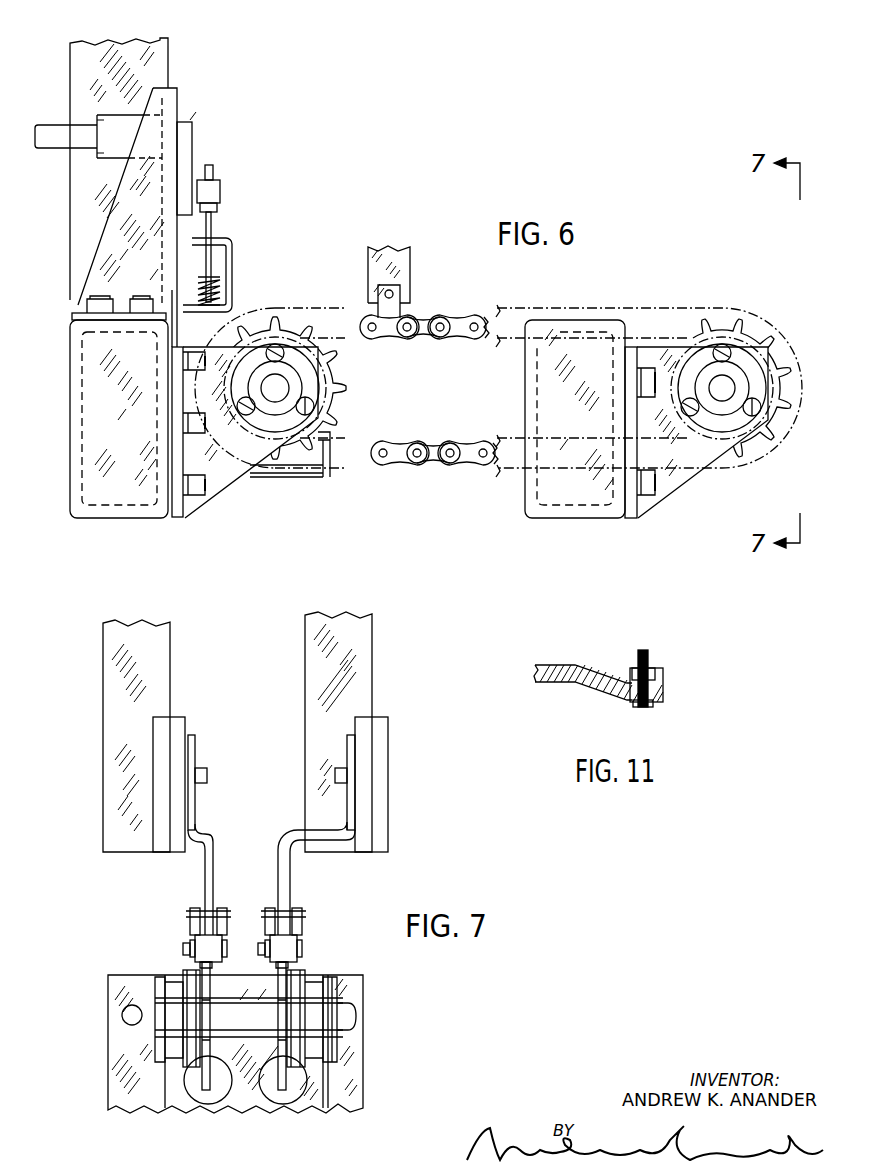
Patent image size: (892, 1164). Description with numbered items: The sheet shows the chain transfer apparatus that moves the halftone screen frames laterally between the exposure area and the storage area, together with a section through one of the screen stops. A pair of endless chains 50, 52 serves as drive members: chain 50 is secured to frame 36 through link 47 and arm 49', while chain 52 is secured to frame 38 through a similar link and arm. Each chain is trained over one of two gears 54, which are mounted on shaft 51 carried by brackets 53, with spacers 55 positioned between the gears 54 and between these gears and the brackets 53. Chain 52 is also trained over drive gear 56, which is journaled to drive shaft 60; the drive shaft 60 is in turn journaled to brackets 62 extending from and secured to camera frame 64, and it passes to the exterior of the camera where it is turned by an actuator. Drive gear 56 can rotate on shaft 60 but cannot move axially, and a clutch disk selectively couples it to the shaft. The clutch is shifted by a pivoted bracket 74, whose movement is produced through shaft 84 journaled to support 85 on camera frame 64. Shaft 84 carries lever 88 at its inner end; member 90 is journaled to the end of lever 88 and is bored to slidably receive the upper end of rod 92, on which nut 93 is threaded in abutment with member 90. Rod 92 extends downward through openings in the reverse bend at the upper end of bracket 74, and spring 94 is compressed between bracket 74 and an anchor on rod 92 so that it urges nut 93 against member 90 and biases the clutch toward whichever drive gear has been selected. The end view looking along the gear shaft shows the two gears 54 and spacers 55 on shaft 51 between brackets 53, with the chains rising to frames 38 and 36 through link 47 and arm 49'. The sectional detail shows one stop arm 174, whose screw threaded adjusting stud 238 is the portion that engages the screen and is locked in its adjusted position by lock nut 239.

In FIG. 7, the frame 36 is at (373, 690).
In FIG. 7, the frame 38 is at (172, 690).
In FIG. 6, the link 47 is at (400, 292).
In FIG. 7, the link 47 is at (220, 935).
In FIG. 6, the arm 49' is at (418, 262).
In FIG. 7, the arm 49' is at (271, 855).
In FIG. 6, the endless drive member 50 is at (475, 317).
In FIG. 7, the endless drive member 50 is at (298, 952).
In FIG. 6, the shaft 51 is at (718, 386).
In FIG. 7, the shaft 51 is at (343, 1015).
In FIG. 7, the endless drive member 52 is at (190, 943).
In FIG. 6, the bracket 53 is at (697, 477).
In FIG. 7, the bracket 53 is at (328, 1080).
In FIG. 6, the gear 54 is at (750, 457).
In FIG. 7, the gear 54 is at (282, 1080).
In FIG. 7, the spacer 55 is at (178, 998).
In FIG. 6, the drive gear 56 is at (343, 388).
In FIG. 6, the drive shaft 60 is at (278, 382).
In FIG. 6, the bracket 62 is at (223, 482).
In FIG. 6, the camera frame 64 is at (115, 520).
In FIG. 6, the bracket 74 is at (223, 242).
In FIG. 6, the shaft 84 is at (60, 130).
In FIG. 6, the support 85 is at (95, 248).
In FIG. 6, the lever 88 is at (192, 128).
In FIG. 6, the member 90 is at (220, 183).
In FIG. 6, the rod 92 is at (212, 262).
In FIG. 6, the nut 93 is at (218, 207).
In FIG. 6, the spring 94 is at (218, 286).
In FIG. 11, the stop arm 174 is at (590, 670).
In FIG. 11, the adjusting stud 238 is at (652, 657).
In FIG. 11, the lock nut 239 is at (657, 672).